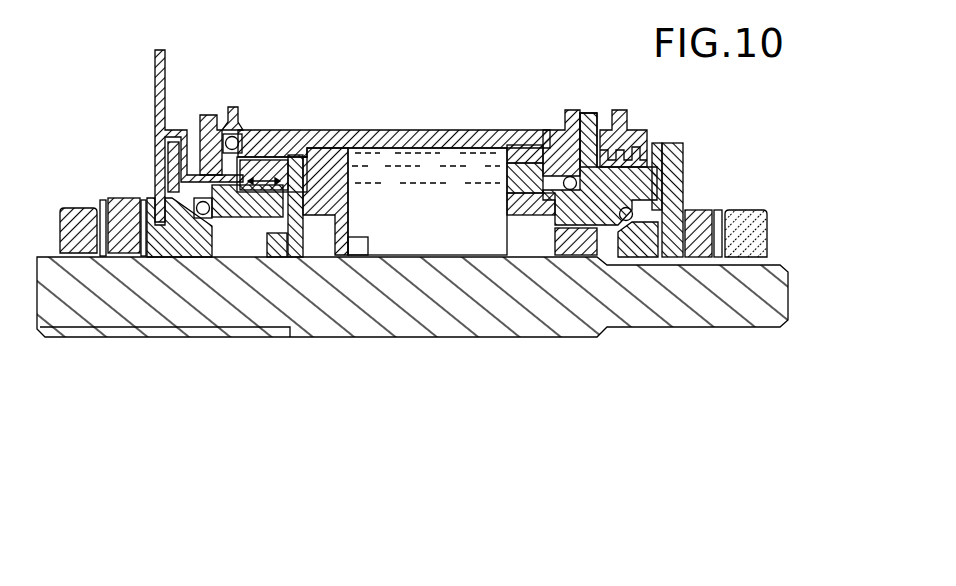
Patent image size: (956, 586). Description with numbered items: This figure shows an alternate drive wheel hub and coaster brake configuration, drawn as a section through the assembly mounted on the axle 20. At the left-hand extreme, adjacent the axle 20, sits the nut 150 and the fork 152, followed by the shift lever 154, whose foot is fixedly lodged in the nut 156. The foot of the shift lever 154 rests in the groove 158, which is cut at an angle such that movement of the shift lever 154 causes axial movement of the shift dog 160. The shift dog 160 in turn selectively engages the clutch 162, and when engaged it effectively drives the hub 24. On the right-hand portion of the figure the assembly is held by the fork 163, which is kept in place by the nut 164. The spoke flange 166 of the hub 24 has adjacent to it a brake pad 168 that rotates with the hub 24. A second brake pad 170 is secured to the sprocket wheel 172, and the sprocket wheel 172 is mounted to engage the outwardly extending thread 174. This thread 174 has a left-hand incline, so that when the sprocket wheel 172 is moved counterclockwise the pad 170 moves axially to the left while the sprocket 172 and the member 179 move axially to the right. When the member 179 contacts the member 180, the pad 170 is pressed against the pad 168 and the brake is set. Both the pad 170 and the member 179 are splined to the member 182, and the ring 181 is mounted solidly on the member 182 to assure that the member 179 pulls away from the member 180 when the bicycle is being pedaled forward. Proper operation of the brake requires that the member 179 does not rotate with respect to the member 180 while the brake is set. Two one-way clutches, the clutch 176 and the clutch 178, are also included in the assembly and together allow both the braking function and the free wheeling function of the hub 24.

The axle 20 is at (395, 318).
The hub 24 is at (410, 135).
The nut 150 is at (72, 208).
The fork 152 is at (122, 198).
The shift lever 154 is at (161, 90).
The nut 156 is at (163, 258).
The groove 158 is at (178, 212).
The shift dog 160 is at (268, 172).
The clutch 162 is at (327, 160).
The fork 163 is at (693, 212).
The nut 164 is at (747, 218).
The spoke flange 166 is at (565, 116).
The brake pad 168 is at (578, 112).
The second brake pad 170 is at (590, 118).
The sprocket wheel 172 is at (623, 112).
The outwardly extending thread 174 is at (605, 152).
The clutch 176 is at (510, 177).
The clutch 178 is at (563, 242).
The member 179 is at (643, 162).
The member 180 is at (678, 155).
The ring 181 is at (653, 188).
The member 182 is at (510, 203).